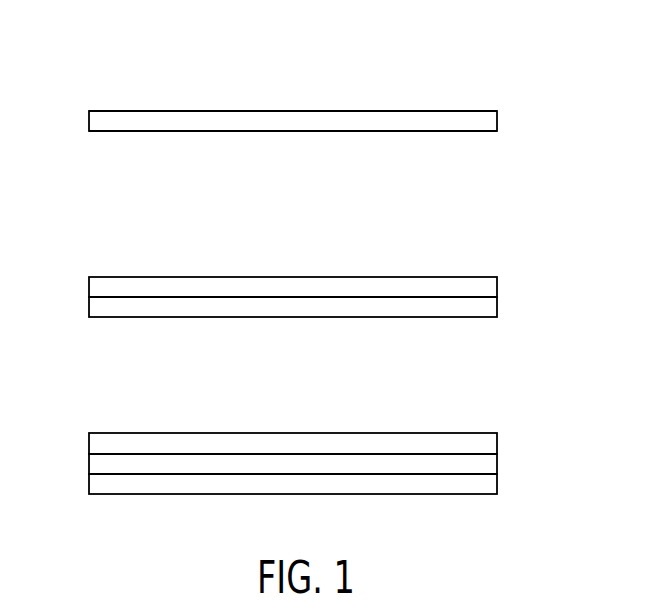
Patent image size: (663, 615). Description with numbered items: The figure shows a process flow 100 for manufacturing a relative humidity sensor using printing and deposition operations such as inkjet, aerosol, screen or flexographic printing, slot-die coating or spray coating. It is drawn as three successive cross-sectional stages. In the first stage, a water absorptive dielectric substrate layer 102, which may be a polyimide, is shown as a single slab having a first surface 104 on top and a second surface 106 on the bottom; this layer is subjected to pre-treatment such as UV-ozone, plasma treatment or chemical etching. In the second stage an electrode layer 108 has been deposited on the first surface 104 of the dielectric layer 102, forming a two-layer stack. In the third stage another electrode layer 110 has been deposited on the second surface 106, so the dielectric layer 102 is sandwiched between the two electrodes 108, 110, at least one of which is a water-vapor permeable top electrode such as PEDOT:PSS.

The process flow 100 is at (106, 76).
The water absorptive dielectric substrate layer 102 is at (490, 123).
The first surface 104 is at (438, 111).
The second surface 106 is at (438, 132).
The electrode layer 108 is at (477, 285).
The electrode layer 110 is at (460, 485).